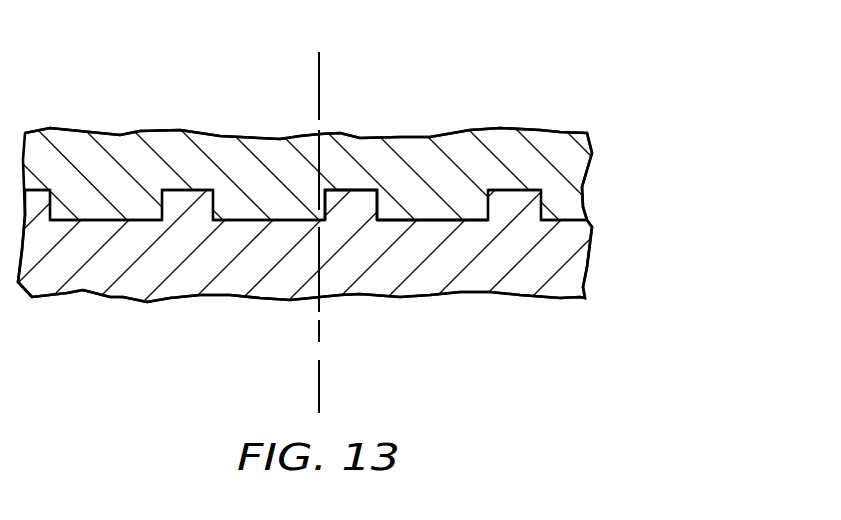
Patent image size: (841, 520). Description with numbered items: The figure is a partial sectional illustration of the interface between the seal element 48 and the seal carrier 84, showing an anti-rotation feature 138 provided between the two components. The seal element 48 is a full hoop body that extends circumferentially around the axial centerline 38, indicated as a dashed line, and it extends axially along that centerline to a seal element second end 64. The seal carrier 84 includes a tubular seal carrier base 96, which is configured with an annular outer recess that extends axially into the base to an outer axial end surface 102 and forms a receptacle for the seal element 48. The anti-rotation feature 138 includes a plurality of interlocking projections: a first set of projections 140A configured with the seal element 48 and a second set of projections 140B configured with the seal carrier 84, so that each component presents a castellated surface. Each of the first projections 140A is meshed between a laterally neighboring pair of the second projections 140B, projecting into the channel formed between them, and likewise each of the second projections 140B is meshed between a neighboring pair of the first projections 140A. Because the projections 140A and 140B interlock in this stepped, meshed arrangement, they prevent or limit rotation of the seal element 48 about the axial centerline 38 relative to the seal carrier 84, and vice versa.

The axial centerline 38 is at (320, 57).
The seal element 48 is at (604, 152).
The anti-rotation feature 138 is at (609, 216).
The seal carrier 84 is at (384, 246).
The seal carrier base 96 is at (606, 260).
The seal element second end 64 is at (423, 223).
The outer axial end surface 102 is at (370, 190).
The first projections 140A is at (100, 223).
The second projections 140B is at (32, 192).